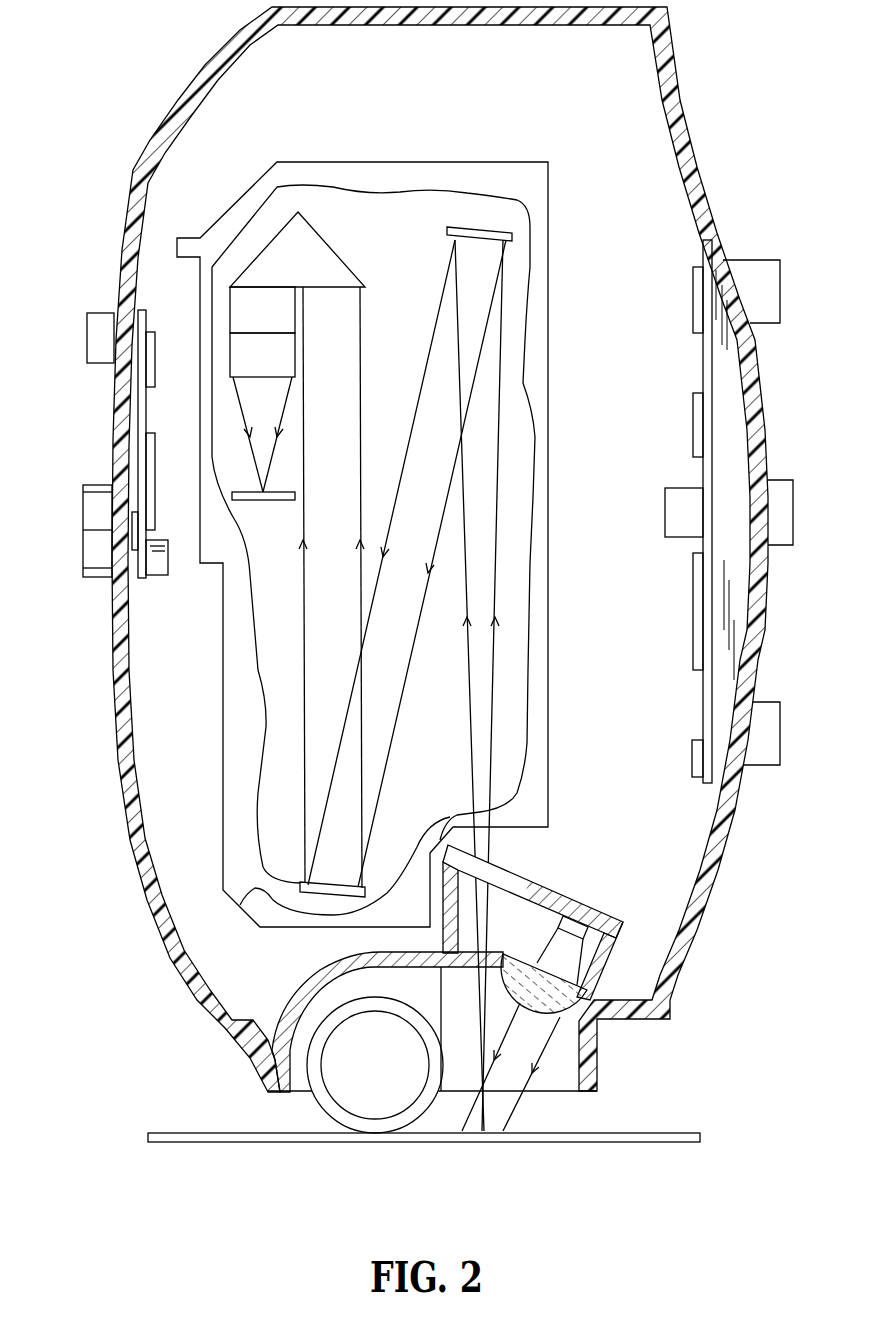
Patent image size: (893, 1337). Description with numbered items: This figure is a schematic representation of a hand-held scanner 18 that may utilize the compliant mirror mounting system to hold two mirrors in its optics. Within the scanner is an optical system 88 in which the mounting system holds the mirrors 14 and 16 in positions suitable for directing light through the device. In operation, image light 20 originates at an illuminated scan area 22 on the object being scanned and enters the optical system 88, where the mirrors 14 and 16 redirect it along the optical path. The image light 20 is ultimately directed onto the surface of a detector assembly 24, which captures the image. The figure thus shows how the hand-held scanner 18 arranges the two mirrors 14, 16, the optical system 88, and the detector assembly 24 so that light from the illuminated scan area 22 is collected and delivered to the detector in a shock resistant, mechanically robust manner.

The hand-held scanner 18 is at (130, 170).
The optical system 88 is at (415, 155).
The mirror 14 is at (516, 213).
The image light 20 is at (498, 470).
The detector assembly 24 is at (241, 492).
The mirror 16 is at (240, 905).
The illuminated scan area 22 is at (508, 1147).